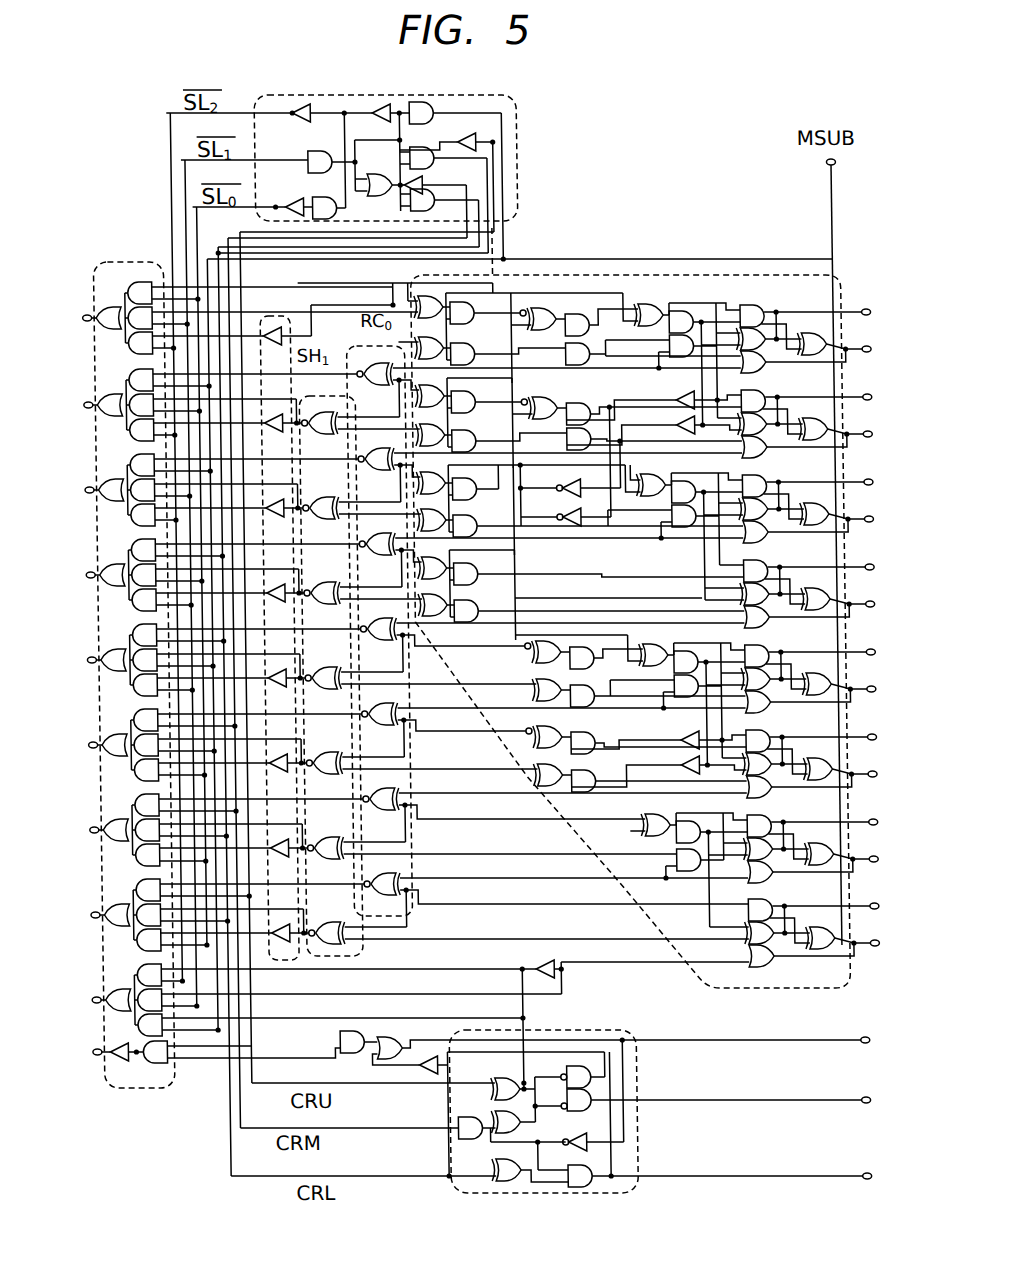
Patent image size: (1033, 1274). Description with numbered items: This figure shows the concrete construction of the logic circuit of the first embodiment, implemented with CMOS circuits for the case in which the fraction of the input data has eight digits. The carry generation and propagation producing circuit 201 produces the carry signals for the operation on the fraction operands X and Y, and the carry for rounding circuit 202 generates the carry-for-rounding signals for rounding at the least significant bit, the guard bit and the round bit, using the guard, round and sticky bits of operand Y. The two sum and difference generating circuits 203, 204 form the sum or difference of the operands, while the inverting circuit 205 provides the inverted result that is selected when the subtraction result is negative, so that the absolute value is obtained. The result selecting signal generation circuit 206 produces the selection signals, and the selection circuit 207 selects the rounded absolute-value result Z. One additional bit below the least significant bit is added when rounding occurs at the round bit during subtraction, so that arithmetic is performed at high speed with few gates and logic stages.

The carry generation and propagation producing circuit 201 is at (612, 273).
The carry for rounding circuit 202 is at (628, 1160).
The sum and difference generating circuit 203 is at (292, 318).
The sum and difference generating circuit 204 is at (357, 957).
The inverting circuit 205 is at (276, 962).
The result selecting signal generation circuit 206 is at (517, 110).
The selection circuit 207 is at (142, 1090).